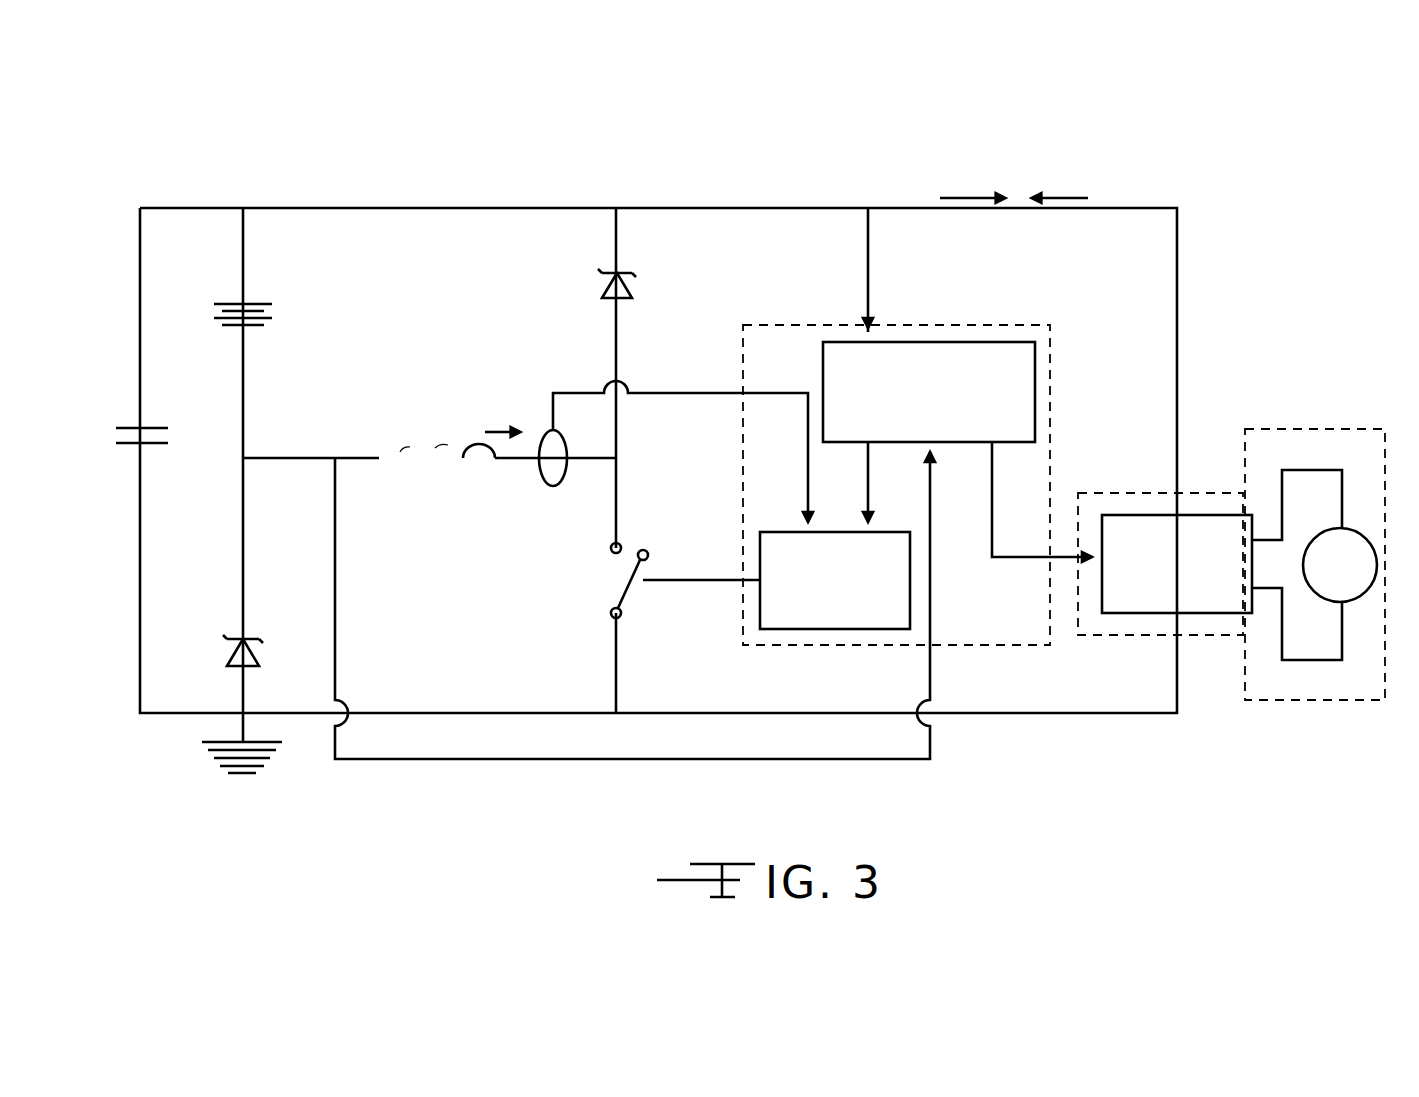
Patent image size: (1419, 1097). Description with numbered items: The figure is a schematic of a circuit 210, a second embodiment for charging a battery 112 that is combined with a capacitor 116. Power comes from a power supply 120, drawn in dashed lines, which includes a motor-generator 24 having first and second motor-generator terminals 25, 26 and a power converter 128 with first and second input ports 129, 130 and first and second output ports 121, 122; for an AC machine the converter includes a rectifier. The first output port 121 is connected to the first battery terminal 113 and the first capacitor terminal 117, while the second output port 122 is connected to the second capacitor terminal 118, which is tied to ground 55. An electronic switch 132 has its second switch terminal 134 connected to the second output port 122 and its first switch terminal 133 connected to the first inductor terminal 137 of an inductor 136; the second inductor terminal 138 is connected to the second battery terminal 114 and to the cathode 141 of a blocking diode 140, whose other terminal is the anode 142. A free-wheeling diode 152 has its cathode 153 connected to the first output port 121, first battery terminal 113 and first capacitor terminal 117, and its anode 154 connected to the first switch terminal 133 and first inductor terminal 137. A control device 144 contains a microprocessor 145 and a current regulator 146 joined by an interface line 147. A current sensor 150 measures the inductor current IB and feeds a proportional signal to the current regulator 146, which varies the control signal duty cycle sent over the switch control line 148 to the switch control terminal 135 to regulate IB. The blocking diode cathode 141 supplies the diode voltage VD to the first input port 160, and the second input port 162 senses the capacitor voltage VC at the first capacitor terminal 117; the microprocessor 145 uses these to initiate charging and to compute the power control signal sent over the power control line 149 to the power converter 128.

The circuit 210 is at (805, 152).
The battery 112 is at (238, 298).
The first battery terminal 113 is at (246, 303).
The second battery terminal 114 is at (246, 326).
The capacitor 116 is at (135, 428).
The first capacitor terminal 117 is at (144, 428).
The second capacitor terminal 118 is at (144, 444).
The blocking diode 140 is at (232, 648).
The cathode of the blocking diode 141 is at (245, 639).
The anode of the blocking diode 142 is at (245, 667).
The ground 55 is at (278, 748).
The inductor 136 is at (377, 442).
The first inductor terminal 137 is at (494, 460).
The second inductor terminal 138 is at (380, 462).
The current sensor 150 is at (553, 395).
The free-wheeling diode 152 is at (600, 290).
The cathode 153 is at (620, 274).
The anode 154 is at (620, 300).
The electronic switch 132 is at (595, 560).
The first switch terminal 133 is at (619, 544).
The second switch terminal 134 is at (618, 618).
The switch control terminal 135 is at (636, 566).
The switch control line 148 is at (666, 580).
The control device 144 is at (998, 320).
The microprocessor 145 is at (1037, 392).
The second input port 162 is at (868, 342).
The first input port 160 is at (858, 465).
The interface line 147 is at (868, 478).
The power control line 149 is at (994, 472).
The current regulator 146 is at (808, 630).
The power converter 128 is at (1140, 618).
The first output port 121 is at (1178, 515).
The second output port 122 is at (1178, 613).
The power supply 120 is at (1312, 428).
The first input port 129 is at (1256, 538).
The second input port 130 is at (1256, 590).
The motor-generator 24 is at (1322, 530).
The first motor-generator terminal 25 is at (1342, 528).
The second motor-generator terminal 26 is at (1342, 602).